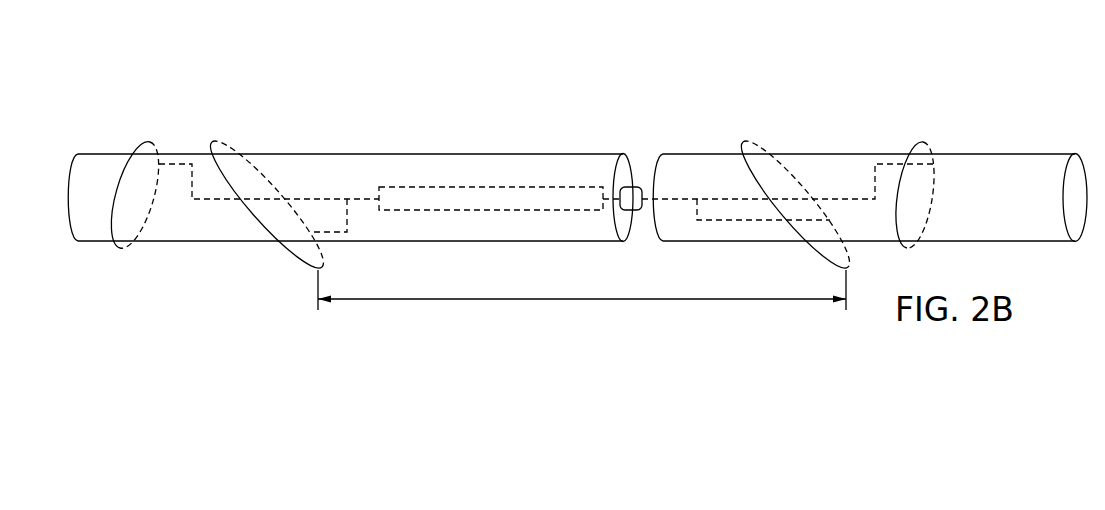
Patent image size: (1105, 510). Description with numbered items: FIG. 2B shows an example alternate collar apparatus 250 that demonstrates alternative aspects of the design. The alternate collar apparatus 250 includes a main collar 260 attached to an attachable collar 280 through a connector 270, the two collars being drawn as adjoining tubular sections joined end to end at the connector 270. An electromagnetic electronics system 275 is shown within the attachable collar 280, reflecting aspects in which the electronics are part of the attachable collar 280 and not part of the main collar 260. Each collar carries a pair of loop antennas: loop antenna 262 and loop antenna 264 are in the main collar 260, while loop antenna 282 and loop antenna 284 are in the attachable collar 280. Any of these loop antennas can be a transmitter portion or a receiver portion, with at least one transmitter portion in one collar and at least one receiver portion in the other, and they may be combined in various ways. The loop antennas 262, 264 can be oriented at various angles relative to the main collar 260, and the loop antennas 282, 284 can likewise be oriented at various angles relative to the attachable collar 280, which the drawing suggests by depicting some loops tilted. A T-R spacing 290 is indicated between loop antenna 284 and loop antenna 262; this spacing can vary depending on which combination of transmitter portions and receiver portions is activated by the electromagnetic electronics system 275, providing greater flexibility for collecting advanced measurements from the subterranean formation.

The alternate collar apparatus 250 is at (441, 66).
The main collar 260 is at (995, 154).
The loop antenna 262 is at (745, 142).
The loop antenna 264 is at (923, 142).
The connector 270 is at (640, 187).
The electromagnetic electronics system 275 is at (492, 187).
The attachable collar 280 is at (341, 154).
The loop antenna 282 is at (150, 142).
The loop antenna 284 is at (218, 142).
The T-R spacing 290 is at (508, 300).